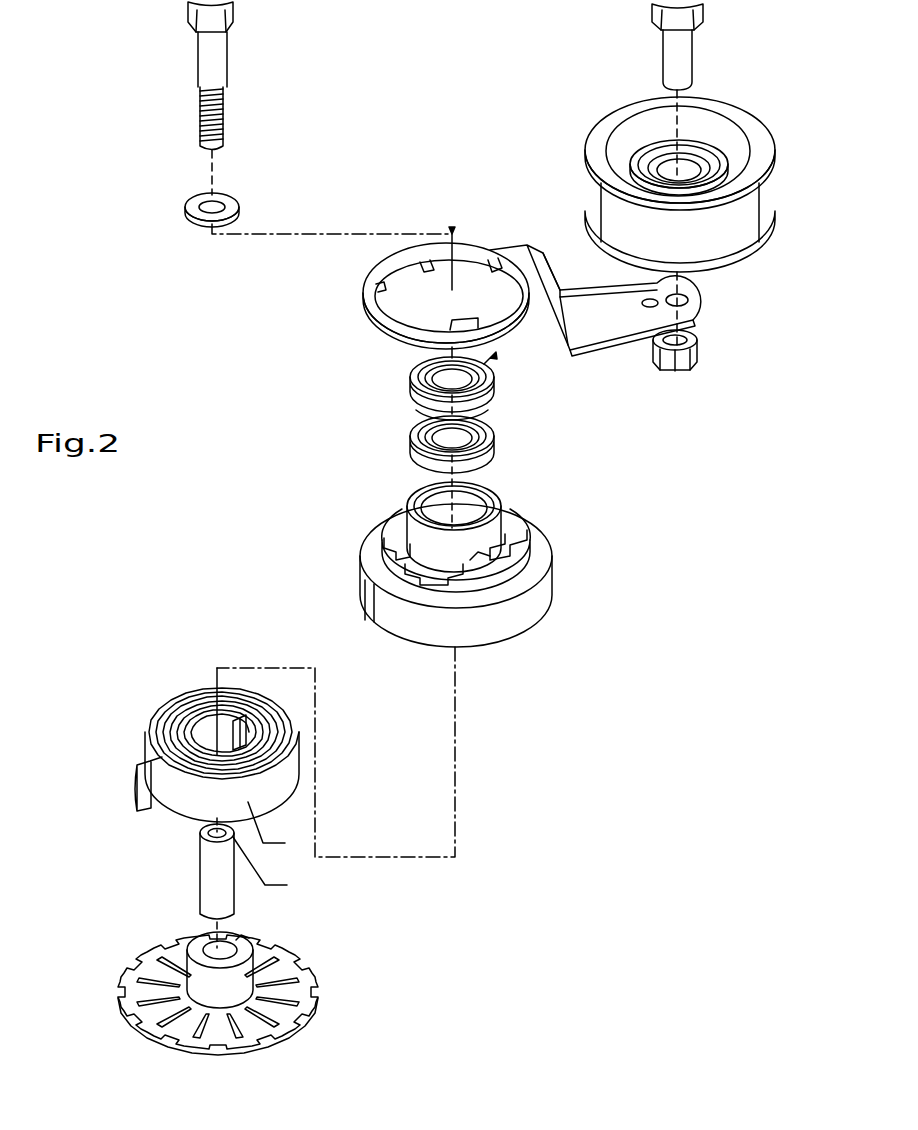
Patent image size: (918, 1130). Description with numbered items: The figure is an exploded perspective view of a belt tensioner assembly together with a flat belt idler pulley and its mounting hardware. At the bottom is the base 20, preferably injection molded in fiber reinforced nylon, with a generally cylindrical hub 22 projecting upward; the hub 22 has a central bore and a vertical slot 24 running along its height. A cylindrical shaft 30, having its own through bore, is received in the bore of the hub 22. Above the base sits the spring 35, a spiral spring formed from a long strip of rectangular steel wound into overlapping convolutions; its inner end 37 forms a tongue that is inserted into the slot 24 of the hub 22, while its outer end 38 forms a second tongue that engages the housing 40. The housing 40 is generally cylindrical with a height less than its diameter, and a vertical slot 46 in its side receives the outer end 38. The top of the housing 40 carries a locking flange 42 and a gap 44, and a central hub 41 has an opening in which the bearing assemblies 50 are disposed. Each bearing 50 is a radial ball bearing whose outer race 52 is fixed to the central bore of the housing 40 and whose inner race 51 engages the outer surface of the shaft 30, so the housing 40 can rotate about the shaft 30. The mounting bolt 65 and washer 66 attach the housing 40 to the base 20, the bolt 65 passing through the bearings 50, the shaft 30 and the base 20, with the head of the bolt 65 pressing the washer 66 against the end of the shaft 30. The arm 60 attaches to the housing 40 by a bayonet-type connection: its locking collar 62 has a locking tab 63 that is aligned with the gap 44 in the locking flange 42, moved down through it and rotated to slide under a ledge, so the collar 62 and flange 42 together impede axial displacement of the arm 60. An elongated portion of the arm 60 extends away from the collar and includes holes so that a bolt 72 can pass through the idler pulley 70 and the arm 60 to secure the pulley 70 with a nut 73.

The base 20 is at (254, 976).
The hub 22 is at (203, 953).
The vertical slot 24 is at (242, 937).
The shaft 30 is at (213, 893).
The spring 35 is at (218, 761).
The inner end 37 is at (232, 727).
The outer end 38 is at (138, 812).
The housing 40 is at (454, 584).
The central hub 41 is at (503, 505).
The locking flange 42 is at (408, 574).
The gap 44 is at (477, 558).
The slot 46 is at (373, 623).
The bearing assembly 50 is at (488, 393).
The inner race 51 is at (453, 420).
The outer race 52 is at (468, 460).
The arm 60 is at (608, 323).
The locking collar 62 is at (422, 307).
The locking tab 63 is at (465, 325).
The mounting bolt 65 is at (218, 70).
The washer 66 is at (233, 207).
The idler pulley 70 is at (748, 217).
The bolt 72 is at (682, 57).
The nut 73 is at (693, 358).